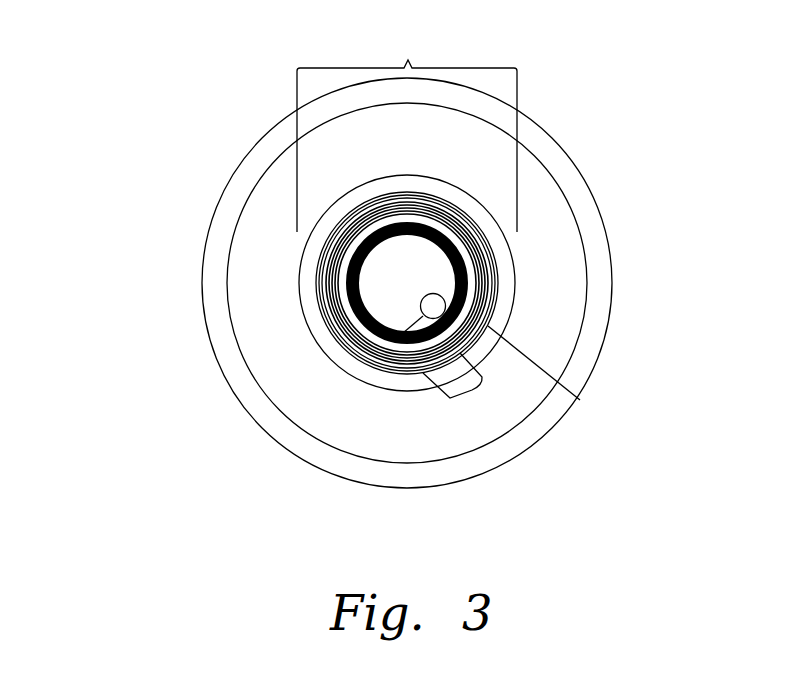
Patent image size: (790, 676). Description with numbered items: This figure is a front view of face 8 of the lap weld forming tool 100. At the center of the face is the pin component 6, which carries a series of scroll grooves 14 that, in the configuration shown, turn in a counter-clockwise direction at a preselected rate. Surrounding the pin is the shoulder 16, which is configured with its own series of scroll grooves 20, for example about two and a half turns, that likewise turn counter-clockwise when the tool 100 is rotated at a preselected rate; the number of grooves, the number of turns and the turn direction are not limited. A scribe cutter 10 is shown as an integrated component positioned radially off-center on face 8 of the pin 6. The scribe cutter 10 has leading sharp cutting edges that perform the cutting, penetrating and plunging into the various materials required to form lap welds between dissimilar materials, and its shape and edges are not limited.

The lap weld forming tool 100 is at (160, 87).
The face 8 is at (407, 207).
The shoulder 16 is at (258, 298).
The pin component 6 is at (393, 298).
The scribe cutter 10 is at (378, 360).
The scroll grooves 14 is at (472, 390).
The scroll grooves 20 is at (530, 360).